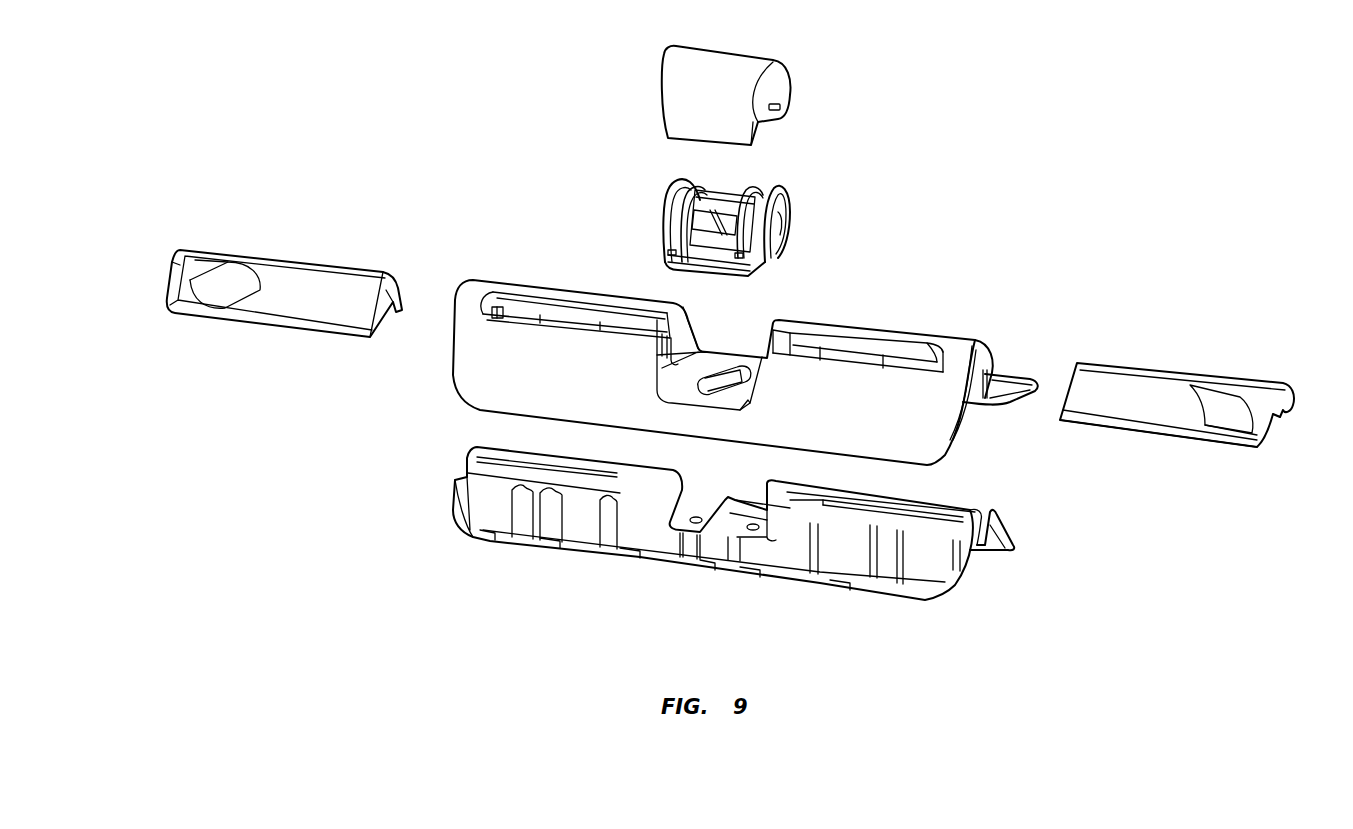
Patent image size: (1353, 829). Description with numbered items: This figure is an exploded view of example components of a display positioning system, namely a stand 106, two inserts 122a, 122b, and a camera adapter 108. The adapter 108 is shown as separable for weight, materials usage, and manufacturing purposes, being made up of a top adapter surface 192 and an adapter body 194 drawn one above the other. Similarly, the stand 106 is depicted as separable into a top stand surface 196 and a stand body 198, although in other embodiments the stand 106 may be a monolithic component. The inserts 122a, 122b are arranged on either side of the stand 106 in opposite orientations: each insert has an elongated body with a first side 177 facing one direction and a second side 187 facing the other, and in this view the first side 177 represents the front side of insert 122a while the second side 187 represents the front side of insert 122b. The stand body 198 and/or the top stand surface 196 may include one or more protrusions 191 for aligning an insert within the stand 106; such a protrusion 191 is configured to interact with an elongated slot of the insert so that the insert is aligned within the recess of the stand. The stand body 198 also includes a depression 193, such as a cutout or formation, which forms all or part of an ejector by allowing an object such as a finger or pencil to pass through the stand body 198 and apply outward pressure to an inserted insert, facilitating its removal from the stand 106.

The stand 106 is at (408, 461).
The adapter 108 is at (604, 153).
The insert 122a is at (1153, 417).
The insert 122b is at (300, 307).
The first side 177 is at (1250, 438).
The second side 187 is at (192, 259).
The protrusion 191 is at (875, 508).
The top adapter surface 192 is at (783, 80).
The depression 193 is at (800, 500).
The adapter body 194 is at (787, 205).
The top stand surface 196 is at (1005, 408).
The stand body 198 is at (993, 553).